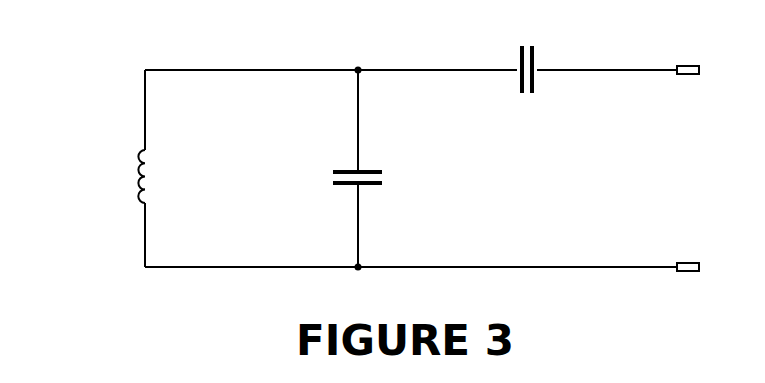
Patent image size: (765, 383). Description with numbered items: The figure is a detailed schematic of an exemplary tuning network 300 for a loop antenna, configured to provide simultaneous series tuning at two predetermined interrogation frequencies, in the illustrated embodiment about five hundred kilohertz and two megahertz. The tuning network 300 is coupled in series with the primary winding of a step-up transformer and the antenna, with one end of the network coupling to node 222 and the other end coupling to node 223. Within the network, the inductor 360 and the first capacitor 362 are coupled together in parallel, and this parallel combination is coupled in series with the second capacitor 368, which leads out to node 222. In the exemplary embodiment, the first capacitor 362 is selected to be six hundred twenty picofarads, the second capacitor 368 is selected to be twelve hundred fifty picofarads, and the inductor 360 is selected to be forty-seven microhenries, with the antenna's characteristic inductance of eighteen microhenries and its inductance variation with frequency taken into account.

The tuning network 300 is at (68, 30).
The inductor L1 360 is at (148, 168).
The capacitor C1 362 is at (388, 174).
The capacitor C2 368 is at (535, 84).
The node 222 is at (688, 65).
The node 223 is at (688, 263).